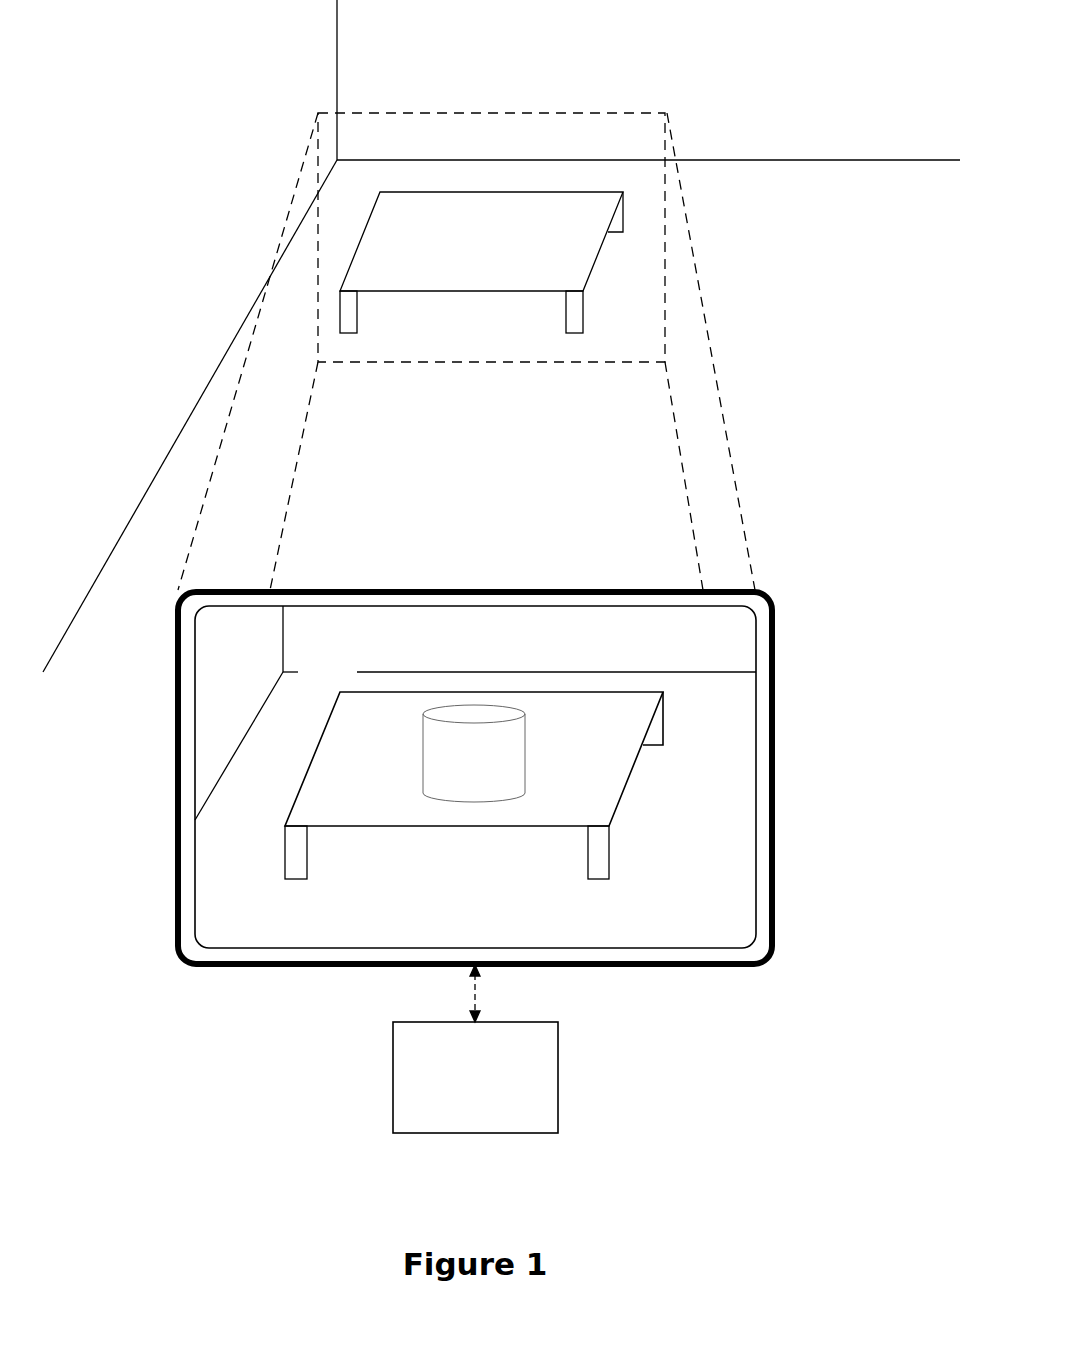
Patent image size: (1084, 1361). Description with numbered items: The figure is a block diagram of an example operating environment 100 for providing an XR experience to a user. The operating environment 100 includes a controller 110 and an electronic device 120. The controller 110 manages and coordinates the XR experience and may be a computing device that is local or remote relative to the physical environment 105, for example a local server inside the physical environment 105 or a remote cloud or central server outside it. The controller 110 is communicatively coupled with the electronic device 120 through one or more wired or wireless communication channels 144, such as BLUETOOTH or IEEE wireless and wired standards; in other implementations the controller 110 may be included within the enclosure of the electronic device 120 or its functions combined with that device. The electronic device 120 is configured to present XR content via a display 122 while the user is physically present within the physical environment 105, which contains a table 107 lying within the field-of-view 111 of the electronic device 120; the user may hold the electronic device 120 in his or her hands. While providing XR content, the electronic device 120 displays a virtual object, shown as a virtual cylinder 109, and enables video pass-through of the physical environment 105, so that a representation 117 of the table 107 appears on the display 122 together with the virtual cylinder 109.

The operating environment 100 is at (259, 36).
The physical environment 105 is at (834, 16).
The table 107 is at (524, 189).
The virtual cylinder 109 is at (455, 712).
The controller 110 is at (475, 1077).
The field-of-view 111 is at (716, 376).
The representation of the table 117 is at (367, 691).
The electronic device 120 is at (176, 766).
The display 122 is at (212, 672).
The communication channels 144 is at (478, 996).